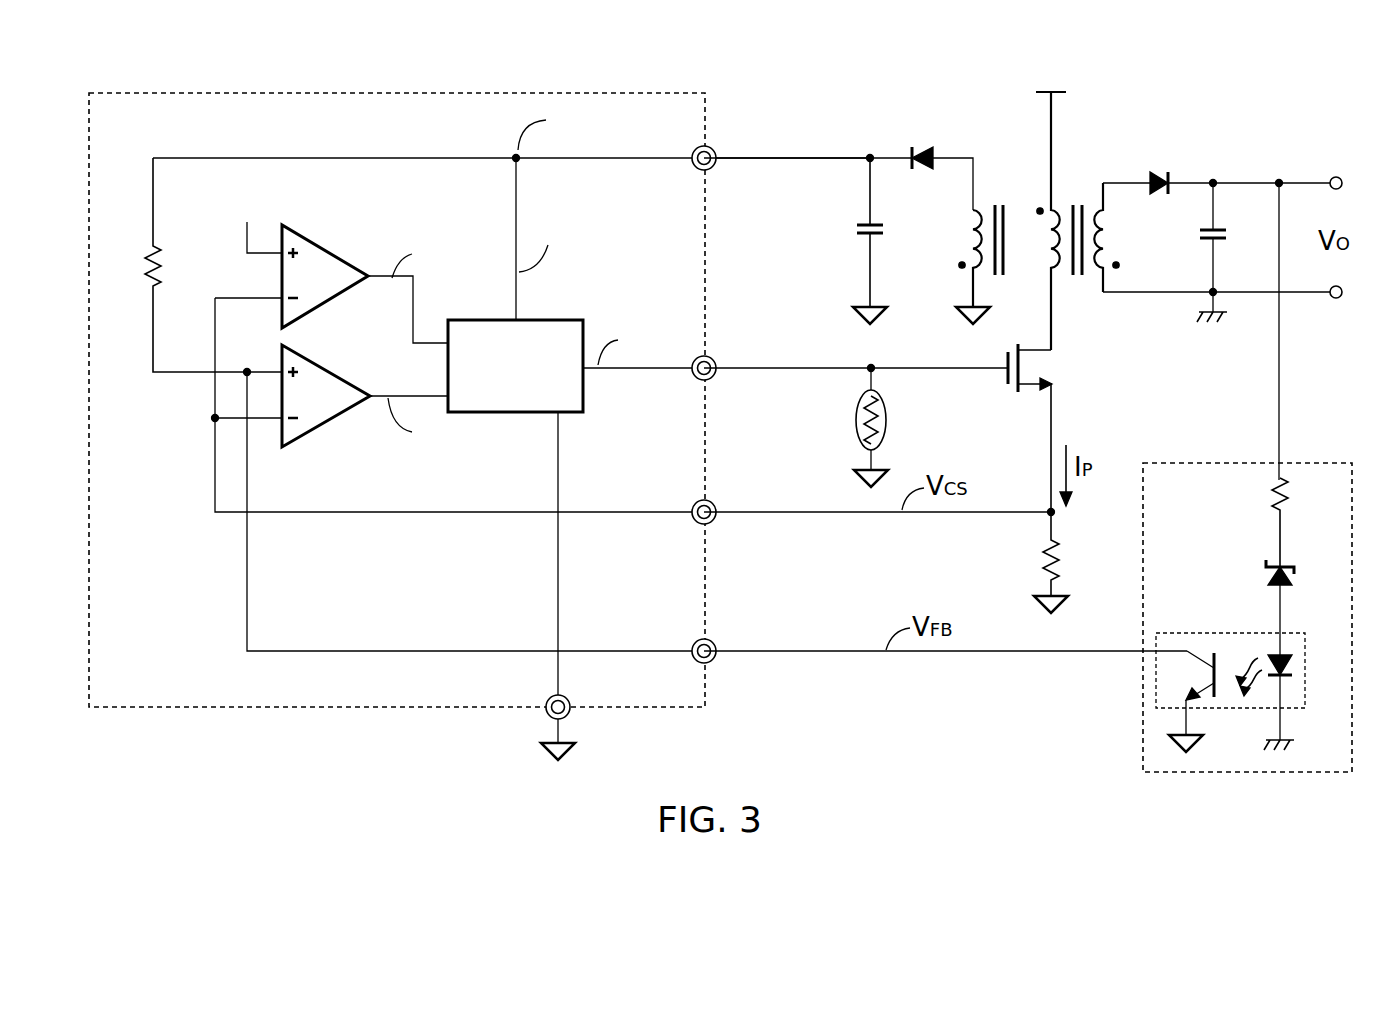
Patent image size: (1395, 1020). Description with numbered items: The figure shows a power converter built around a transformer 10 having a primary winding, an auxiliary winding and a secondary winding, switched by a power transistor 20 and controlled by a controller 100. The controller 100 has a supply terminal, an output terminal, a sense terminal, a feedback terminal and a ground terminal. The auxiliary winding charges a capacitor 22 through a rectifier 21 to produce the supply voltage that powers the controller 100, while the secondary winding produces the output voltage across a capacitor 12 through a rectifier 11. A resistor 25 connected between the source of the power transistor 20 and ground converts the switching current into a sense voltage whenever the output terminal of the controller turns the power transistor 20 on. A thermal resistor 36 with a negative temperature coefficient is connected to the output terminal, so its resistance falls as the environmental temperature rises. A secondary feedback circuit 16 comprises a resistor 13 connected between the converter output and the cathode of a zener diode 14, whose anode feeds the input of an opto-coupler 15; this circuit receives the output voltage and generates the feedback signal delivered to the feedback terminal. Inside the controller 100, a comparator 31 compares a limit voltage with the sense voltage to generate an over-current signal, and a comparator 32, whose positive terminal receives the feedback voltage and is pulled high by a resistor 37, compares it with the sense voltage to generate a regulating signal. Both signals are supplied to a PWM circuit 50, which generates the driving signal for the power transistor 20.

The controller 100 is at (479, 405).
The comparator 31 is at (320, 242).
The comparator 32 is at (320, 362).
The resistor 37 is at (143, 268).
The PWM circuit 50 is at (587, 402).
The rectifier 21 is at (918, 147).
The capacitor 22 is at (886, 236).
The transformer 10 is at (1078, 186).
The rectifier 11 is at (1156, 170).
The capacitor 12 is at (1228, 236).
The thermal resistor 36 is at (854, 424).
The power transistor 20 is at (1056, 372).
The resistor 25 is at (1040, 560).
The secondary feedback circuit 16 is at (1261, 477).
The resistor 13 is at (1290, 496).
The zener diode 14 is at (1270, 574).
The opto-coupler 15 is at (1306, 676).